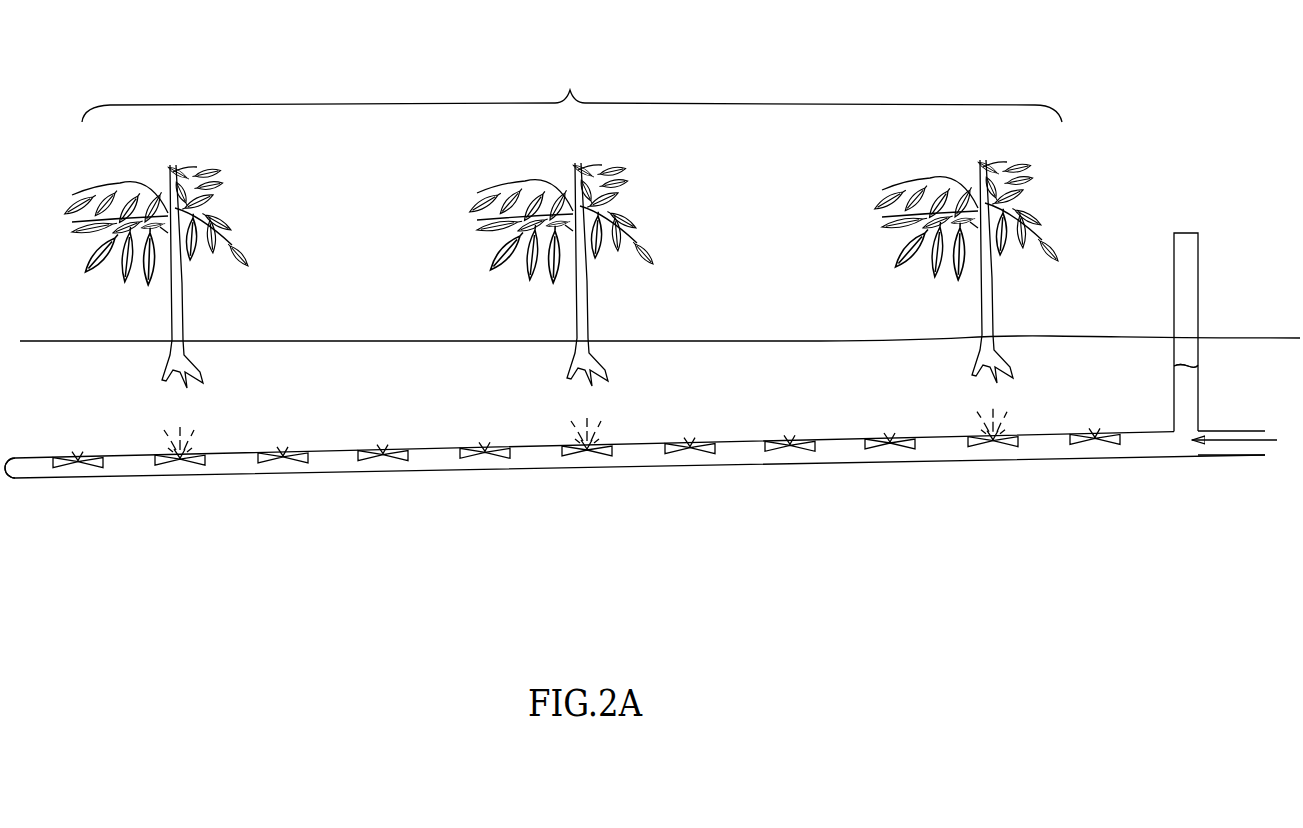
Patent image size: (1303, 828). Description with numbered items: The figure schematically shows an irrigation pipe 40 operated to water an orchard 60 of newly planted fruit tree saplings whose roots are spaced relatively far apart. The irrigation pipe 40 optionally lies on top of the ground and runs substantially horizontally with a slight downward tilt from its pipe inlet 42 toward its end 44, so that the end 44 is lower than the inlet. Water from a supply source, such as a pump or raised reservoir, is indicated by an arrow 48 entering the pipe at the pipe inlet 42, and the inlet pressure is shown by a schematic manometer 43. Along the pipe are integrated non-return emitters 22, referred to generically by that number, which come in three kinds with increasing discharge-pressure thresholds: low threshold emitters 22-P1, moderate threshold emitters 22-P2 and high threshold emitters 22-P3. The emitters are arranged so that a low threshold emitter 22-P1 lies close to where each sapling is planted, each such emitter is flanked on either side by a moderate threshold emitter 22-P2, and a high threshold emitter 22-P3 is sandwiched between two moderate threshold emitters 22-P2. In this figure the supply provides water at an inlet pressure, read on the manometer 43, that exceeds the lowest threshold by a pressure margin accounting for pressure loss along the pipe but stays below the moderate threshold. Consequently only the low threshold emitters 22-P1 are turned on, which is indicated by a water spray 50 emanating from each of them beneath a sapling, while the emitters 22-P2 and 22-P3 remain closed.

The integrated non-return emitters 22 is at (594, 490).
The low discharge-pressure threshold emitter 22-P1 is at (197, 477).
The moderate discharge-pressure threshold emitter 22-P2 is at (95, 479).
The high discharge-pressure threshold emitter 22-P3 is at (400, 473).
The irrigation pipe 40 is at (238, 500).
The pipe inlet 42 is at (1236, 429).
The schematic manometer 43 is at (1190, 285).
The end 44 is at (12, 483).
The arrow 48 is at (1231, 457).
The water spray 50 is at (196, 432).
The orchard 60 is at (570, 90).